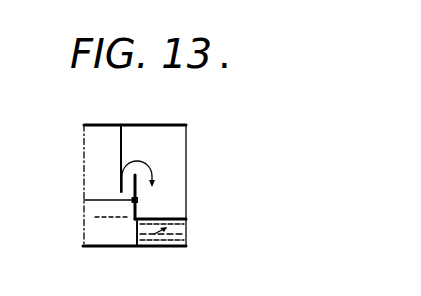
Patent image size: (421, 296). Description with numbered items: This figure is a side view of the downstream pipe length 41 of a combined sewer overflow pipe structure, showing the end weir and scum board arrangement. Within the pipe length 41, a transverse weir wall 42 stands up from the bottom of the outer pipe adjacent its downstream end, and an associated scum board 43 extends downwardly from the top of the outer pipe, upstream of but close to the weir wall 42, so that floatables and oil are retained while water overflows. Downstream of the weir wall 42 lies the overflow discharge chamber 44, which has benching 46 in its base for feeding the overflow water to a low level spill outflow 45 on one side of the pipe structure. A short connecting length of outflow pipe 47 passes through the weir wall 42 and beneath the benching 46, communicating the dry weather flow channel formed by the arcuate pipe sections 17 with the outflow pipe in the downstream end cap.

The arcuate pipe section 17 is at (98, 233).
The pipe length 41 is at (133, 123).
The weir wall 42 is at (132, 202).
The scum board 43 is at (120, 140).
The overflow discharge chamber 44 is at (168, 188).
The low level spill outflow 45 is at (137, 253).
The benching 46 is at (153, 217).
The outflow pipe 47 is at (135, 237).